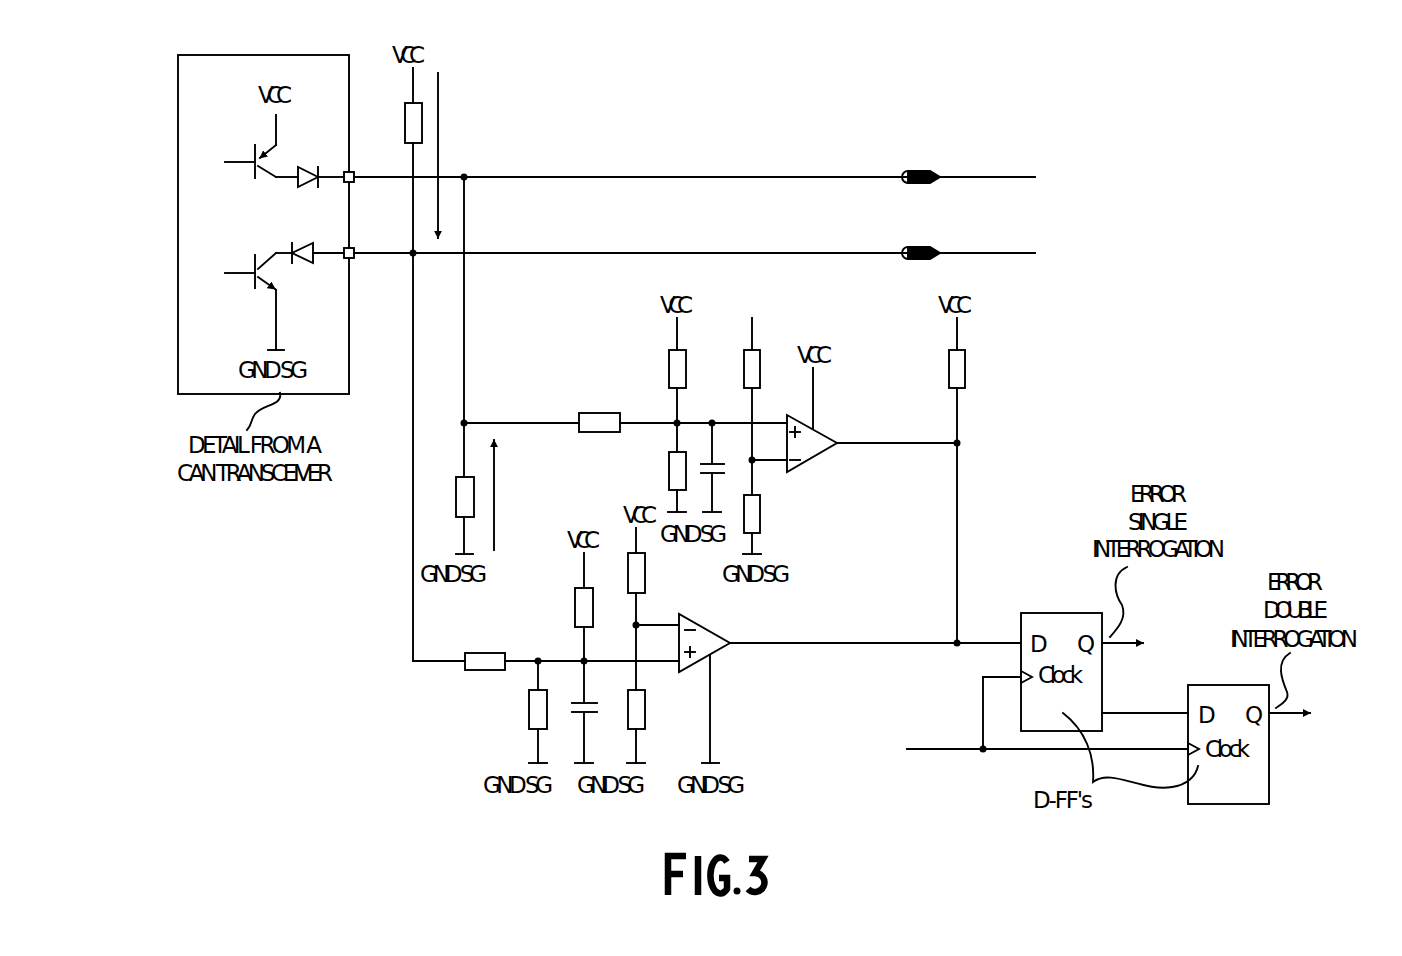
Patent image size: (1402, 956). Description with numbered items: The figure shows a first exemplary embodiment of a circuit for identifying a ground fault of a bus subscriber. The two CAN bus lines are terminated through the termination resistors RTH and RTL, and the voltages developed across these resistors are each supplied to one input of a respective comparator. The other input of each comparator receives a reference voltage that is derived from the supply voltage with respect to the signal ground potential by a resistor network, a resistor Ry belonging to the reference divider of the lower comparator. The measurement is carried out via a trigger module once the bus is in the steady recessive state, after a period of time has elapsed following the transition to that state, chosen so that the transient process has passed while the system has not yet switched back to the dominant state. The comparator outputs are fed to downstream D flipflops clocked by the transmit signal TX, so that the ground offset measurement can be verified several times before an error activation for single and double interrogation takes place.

The termination resistor RTL is at (394, 364).
The termination resistor RTH is at (447, 488).
The resistor Ry is at (650, 726).
The transmit signal TX is at (1031, 749).